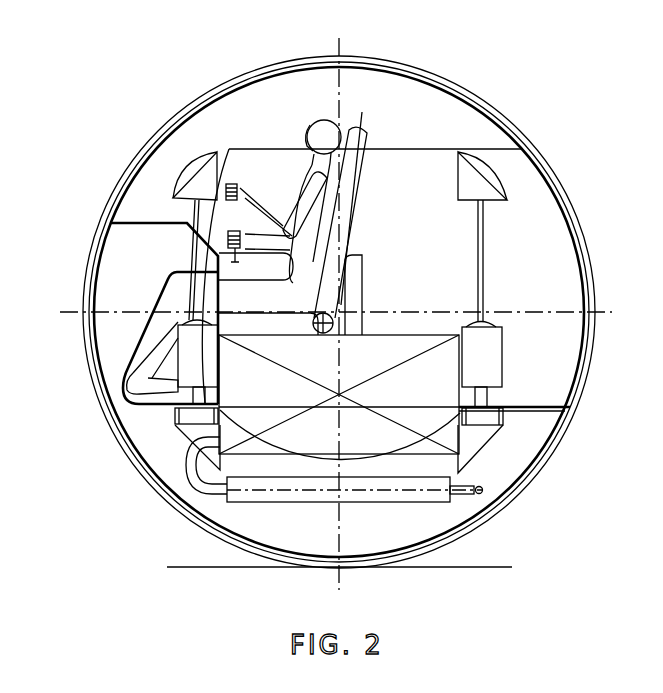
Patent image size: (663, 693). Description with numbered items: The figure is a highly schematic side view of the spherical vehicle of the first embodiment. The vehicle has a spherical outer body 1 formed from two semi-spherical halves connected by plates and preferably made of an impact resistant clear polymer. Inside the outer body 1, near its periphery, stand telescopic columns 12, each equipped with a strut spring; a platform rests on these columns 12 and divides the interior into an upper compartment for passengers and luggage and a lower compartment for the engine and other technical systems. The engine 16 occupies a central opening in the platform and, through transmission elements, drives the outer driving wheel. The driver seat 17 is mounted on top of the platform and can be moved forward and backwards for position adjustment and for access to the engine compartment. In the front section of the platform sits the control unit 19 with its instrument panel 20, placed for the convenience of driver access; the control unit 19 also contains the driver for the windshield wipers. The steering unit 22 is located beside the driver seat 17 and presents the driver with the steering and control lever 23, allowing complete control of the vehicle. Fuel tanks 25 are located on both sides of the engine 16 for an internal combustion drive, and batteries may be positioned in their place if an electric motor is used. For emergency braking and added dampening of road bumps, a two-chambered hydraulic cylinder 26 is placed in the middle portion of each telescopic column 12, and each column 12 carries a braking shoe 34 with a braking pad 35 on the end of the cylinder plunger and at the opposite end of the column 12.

The outer body 1 is at (403, 63).
The telescopic column 12 is at (197, 215).
The engine 16 is at (368, 357).
The driver seat 17 is at (250, 327).
The control unit 19 is at (167, 328).
The instrument panel 20 is at (236, 192).
The steering unit 22 is at (352, 282).
The steering and control lever 23 is at (197, 253).
The fuel tank 25 is at (347, 457).
The two-chambered hydraulic cylinder 26 is at (188, 367).
The braking shoe 34 is at (199, 453).
The braking pad 35 is at (188, 180).